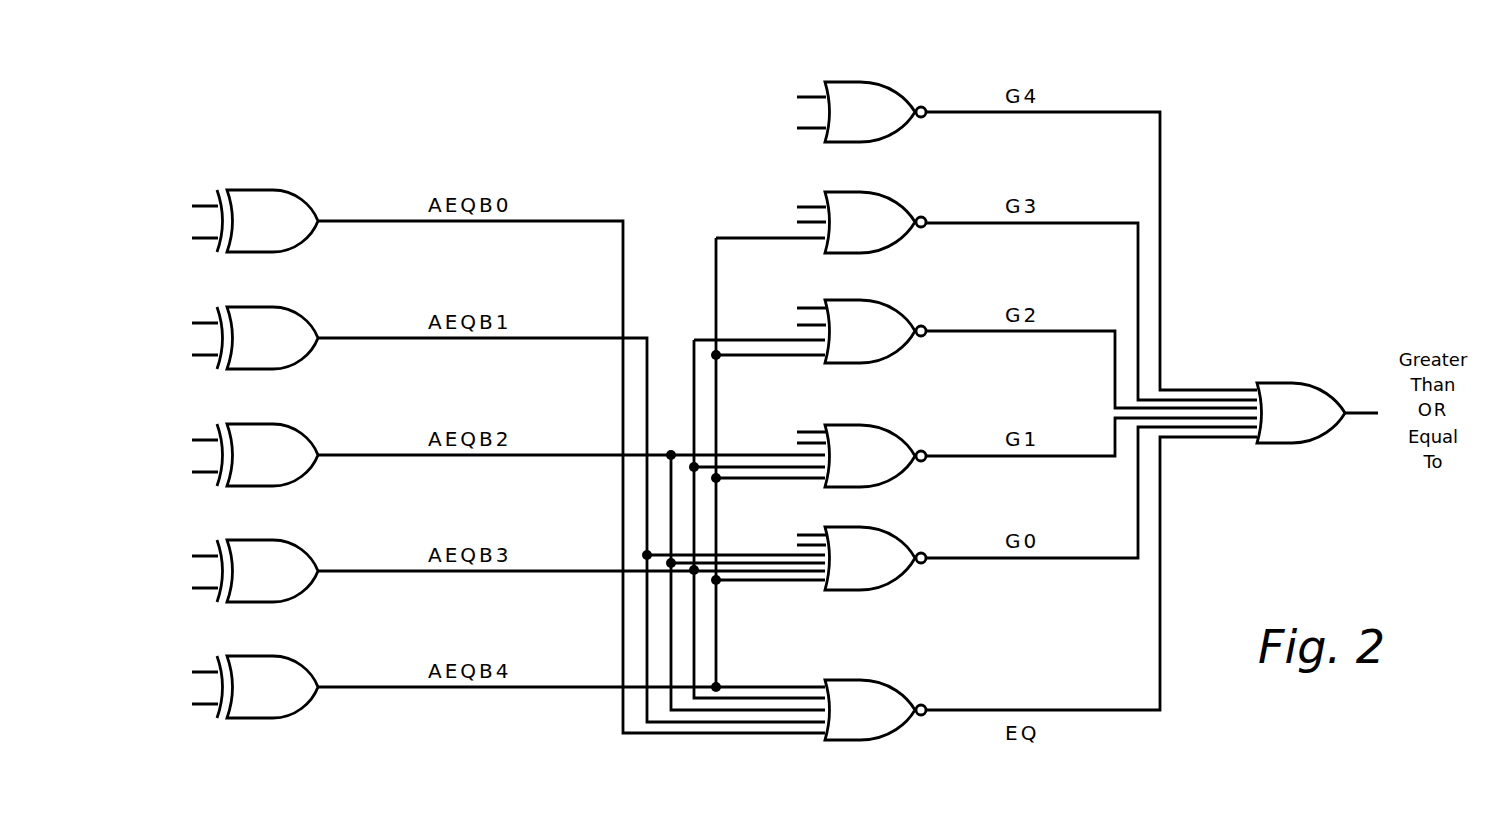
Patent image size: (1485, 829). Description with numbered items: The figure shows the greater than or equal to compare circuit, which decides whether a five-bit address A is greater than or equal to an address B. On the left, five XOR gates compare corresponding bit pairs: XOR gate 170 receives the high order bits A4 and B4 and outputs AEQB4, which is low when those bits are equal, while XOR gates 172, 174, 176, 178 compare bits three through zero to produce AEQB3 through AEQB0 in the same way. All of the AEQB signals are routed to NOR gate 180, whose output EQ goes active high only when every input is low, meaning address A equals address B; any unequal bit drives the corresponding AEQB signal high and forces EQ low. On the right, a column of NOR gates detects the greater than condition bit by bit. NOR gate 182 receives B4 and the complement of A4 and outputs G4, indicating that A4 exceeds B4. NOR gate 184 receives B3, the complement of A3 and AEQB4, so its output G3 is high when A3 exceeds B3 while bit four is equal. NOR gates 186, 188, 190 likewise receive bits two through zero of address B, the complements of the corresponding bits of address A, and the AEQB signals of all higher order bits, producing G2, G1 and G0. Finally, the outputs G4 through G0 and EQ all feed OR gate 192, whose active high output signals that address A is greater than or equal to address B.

The XOR gate 170 is at (303, 702).
The XOR gate 172 is at (303, 586).
The XOR gate 174 is at (303, 470).
The XOR gate 176 is at (303, 353).
The XOR gate 178 is at (303, 236).
The NOR gate 180 is at (900, 725).
The NOR gate 182 is at (900, 127).
The NOR gate 184 is at (900, 237).
The NOR gate 186 is at (900, 346).
The NOR gate 188 is at (900, 471).
The NOR gate 190 is at (900, 573).
The OR gate 192 is at (1318, 442).